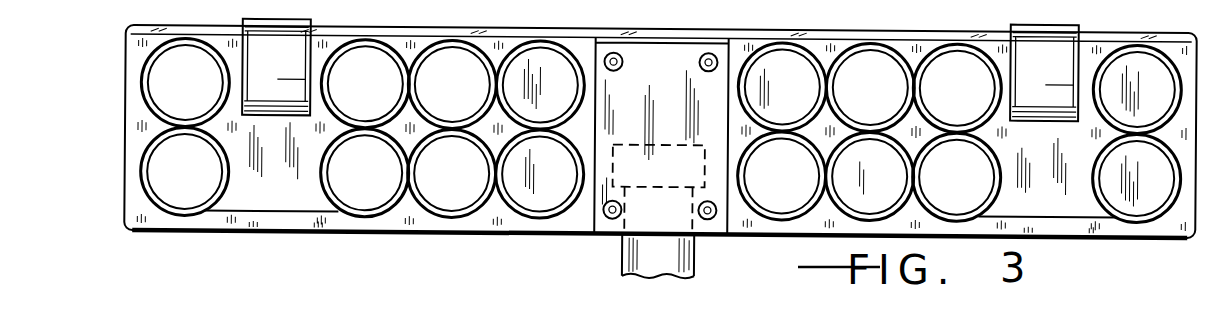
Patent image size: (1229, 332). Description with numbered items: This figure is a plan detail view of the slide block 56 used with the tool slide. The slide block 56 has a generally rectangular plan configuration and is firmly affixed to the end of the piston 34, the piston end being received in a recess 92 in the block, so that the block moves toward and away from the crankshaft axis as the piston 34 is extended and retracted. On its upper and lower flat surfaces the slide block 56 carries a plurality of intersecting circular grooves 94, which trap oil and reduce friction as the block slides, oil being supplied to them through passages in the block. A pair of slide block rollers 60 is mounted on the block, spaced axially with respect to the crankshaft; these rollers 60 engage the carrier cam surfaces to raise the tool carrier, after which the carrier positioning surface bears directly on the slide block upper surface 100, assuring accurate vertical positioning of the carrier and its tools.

The piston 34 is at (623, 246).
The slide block 56 is at (463, 233).
The slide block rollers 60 is at (290, 41).
The recess 92 is at (660, 143).
The intersecting circular grooves 94 is at (206, 121).
The slide block upper surface 100 is at (273, 166).